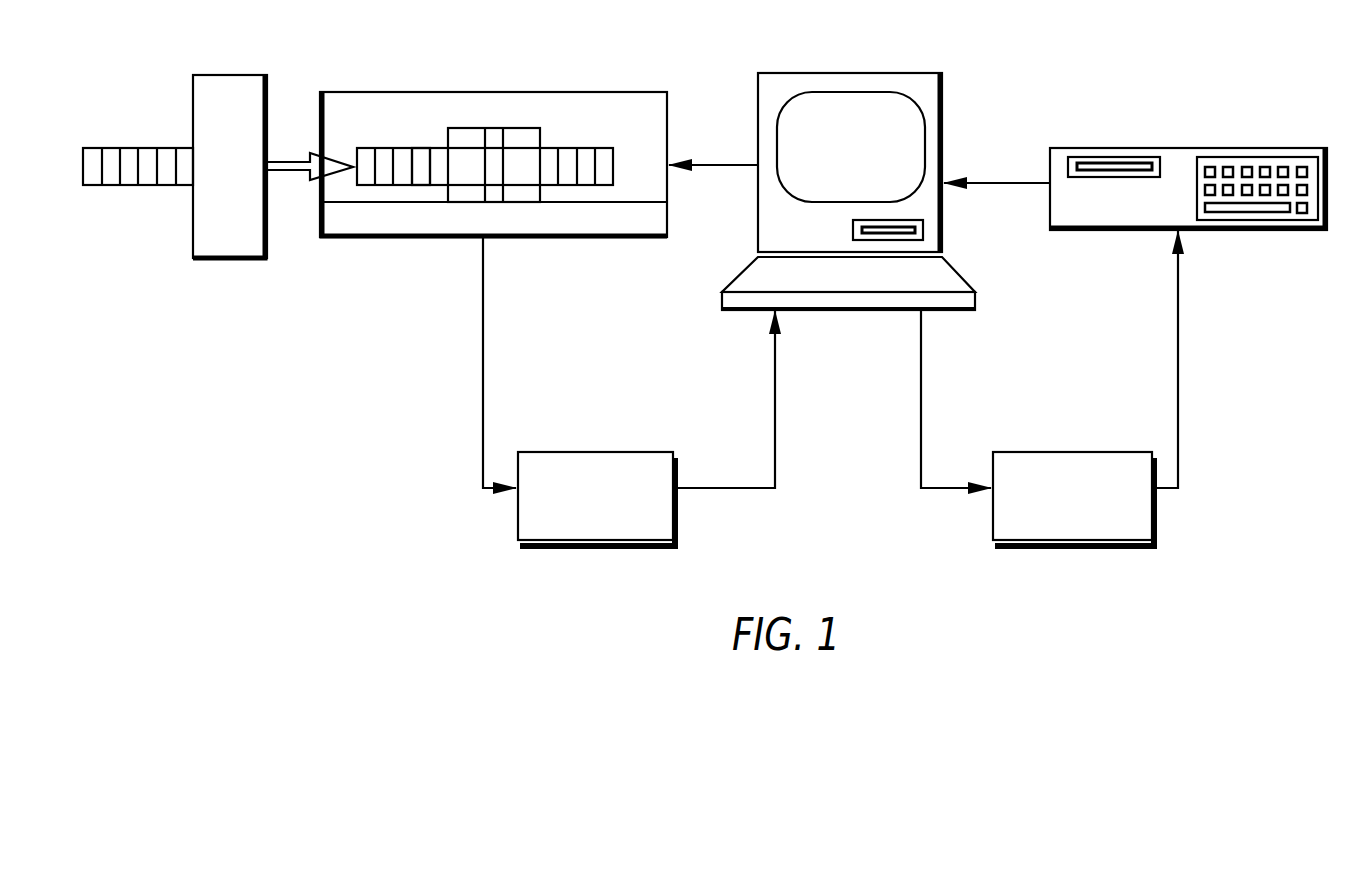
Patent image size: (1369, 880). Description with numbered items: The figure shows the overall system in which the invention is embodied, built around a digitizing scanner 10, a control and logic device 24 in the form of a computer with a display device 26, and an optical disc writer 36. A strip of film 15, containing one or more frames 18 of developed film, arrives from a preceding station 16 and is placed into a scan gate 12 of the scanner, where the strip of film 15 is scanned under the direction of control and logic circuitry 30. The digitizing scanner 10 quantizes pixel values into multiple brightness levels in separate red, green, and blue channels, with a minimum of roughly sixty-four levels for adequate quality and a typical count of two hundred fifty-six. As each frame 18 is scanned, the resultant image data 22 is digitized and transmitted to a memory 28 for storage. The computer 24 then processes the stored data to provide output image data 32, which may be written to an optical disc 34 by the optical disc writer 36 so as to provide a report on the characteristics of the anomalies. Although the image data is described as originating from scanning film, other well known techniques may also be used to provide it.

The digitizing scanner 10 is at (493, 179).
The scan gate 12 is at (518, 192).
The strip of film 15 is at (140, 187).
The film processor 16 is at (232, 72).
The frame 18 is at (415, 160).
The image data 22 is at (518, 527).
The control and logic device 24 is at (842, 212).
The display device 26 is at (905, 127).
The memory 28 is at (862, 312).
The control and logic circuitry 30 is at (565, 223).
The output image data 32 is at (1163, 537).
The optical disc 34 is at (1092, 162).
The optical disc writer 36 is at (1188, 188).